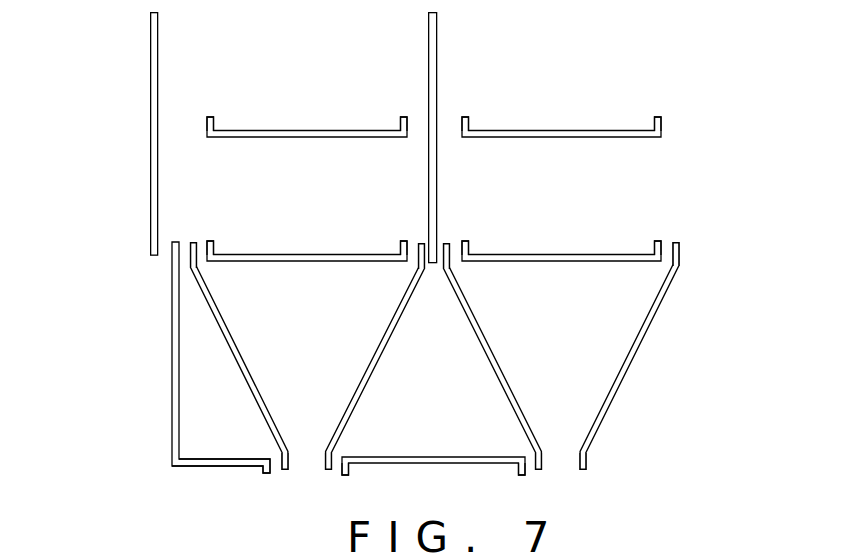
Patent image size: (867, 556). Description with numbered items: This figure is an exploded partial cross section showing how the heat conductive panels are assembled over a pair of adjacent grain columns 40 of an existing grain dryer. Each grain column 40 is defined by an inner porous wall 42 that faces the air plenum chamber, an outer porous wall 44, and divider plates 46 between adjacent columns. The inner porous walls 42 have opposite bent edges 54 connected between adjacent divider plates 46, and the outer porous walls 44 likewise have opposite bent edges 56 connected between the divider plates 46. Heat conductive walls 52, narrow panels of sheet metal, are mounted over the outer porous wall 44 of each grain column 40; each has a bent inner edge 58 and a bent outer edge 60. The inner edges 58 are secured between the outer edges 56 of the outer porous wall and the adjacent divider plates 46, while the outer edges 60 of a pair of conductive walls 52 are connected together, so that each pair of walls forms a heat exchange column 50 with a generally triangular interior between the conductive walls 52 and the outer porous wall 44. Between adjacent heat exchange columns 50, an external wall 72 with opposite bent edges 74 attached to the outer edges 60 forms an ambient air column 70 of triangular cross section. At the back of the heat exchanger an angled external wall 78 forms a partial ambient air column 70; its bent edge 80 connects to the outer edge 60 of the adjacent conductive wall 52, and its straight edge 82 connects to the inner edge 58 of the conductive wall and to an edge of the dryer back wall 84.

The grain column 40 is at (448, 125).
The inner porous wall 42 is at (313, 131).
The outer porous wall 44 is at (296, 258).
The divider plate 46 is at (437, 45).
The heat exchange column 50 is at (434, 255).
The heat conductive wall 52 is at (253, 385).
The bent edge of inner porous wall 54 is at (207, 118).
The bent edge of outer porous wall 56 is at (209, 242).
The bent inner edge of heat conductive wall 58 is at (190, 242).
The bent outer edge of heat conductive wall 60 is at (286, 471).
The ambient air column 70 is at (460, 344).
The external wall 72 is at (417, 464).
The bent edge of external wall 74 is at (345, 474).
The angled external wall 78 is at (172, 381).
The bent edge of angled external wall 80 is at (267, 474).
The straight edge of angled external wall 82 is at (189, 372).
The back wall 84 is at (150, 170).